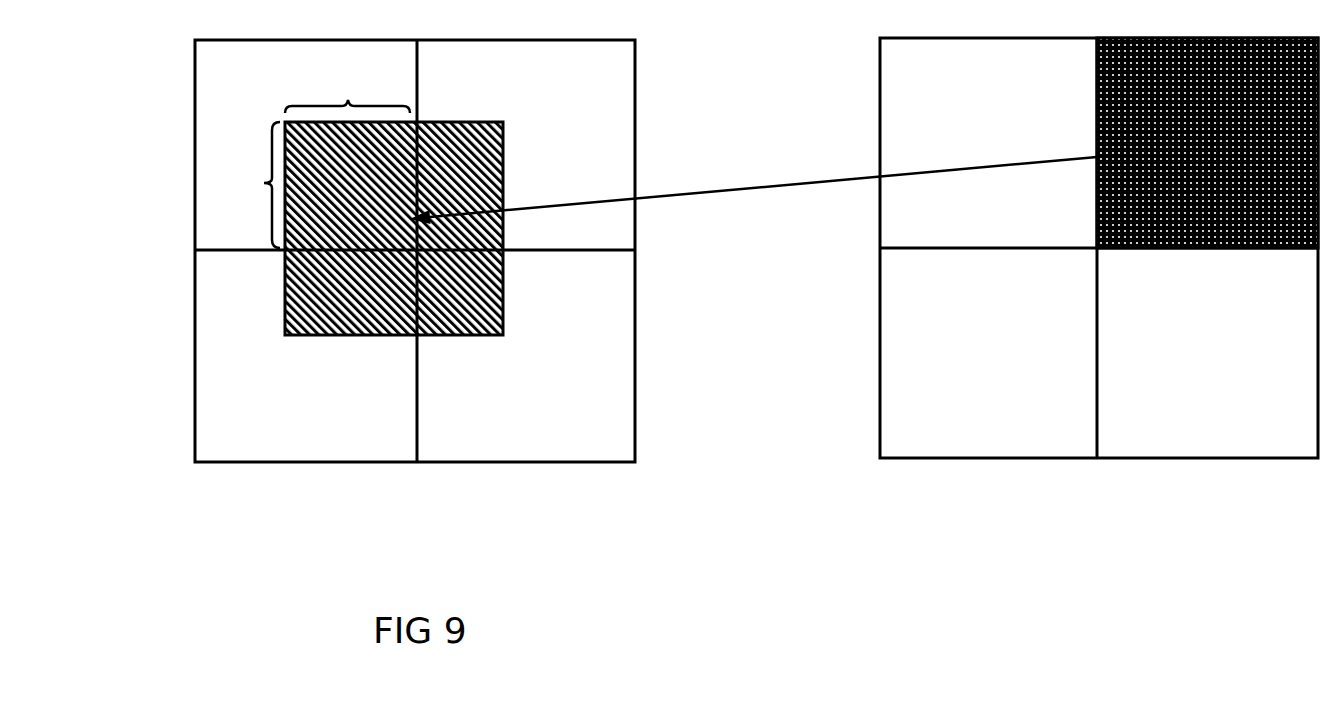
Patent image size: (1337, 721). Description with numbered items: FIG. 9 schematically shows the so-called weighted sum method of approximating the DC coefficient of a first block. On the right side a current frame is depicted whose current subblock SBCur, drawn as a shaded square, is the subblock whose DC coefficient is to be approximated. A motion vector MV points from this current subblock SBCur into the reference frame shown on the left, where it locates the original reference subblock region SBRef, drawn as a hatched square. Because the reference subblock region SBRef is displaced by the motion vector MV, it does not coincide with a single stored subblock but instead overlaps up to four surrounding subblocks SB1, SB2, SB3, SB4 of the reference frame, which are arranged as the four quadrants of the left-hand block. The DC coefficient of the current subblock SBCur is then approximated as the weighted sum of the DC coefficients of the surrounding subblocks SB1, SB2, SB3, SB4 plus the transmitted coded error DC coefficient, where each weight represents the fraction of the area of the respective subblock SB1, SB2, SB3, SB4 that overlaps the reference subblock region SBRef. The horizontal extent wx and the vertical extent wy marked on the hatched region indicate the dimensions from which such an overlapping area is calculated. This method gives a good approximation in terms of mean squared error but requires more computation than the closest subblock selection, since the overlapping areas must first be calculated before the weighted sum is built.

The first surrounding subblock SB1 is at (306, 145).
The second surrounding subblock SB2 is at (526, 145).
The third surrounding subblock SB3 is at (306, 356).
The fourth surrounding subblock SB4 is at (526, 356).
The reference subblock region SBRef is at (520, 152).
The current subblock SBCur is at (1082, 211).
The motion vector MV is at (753, 182).
The horizontal overlap extent wx is at (347, 85).
The vertical overlap extent wy is at (240, 185).